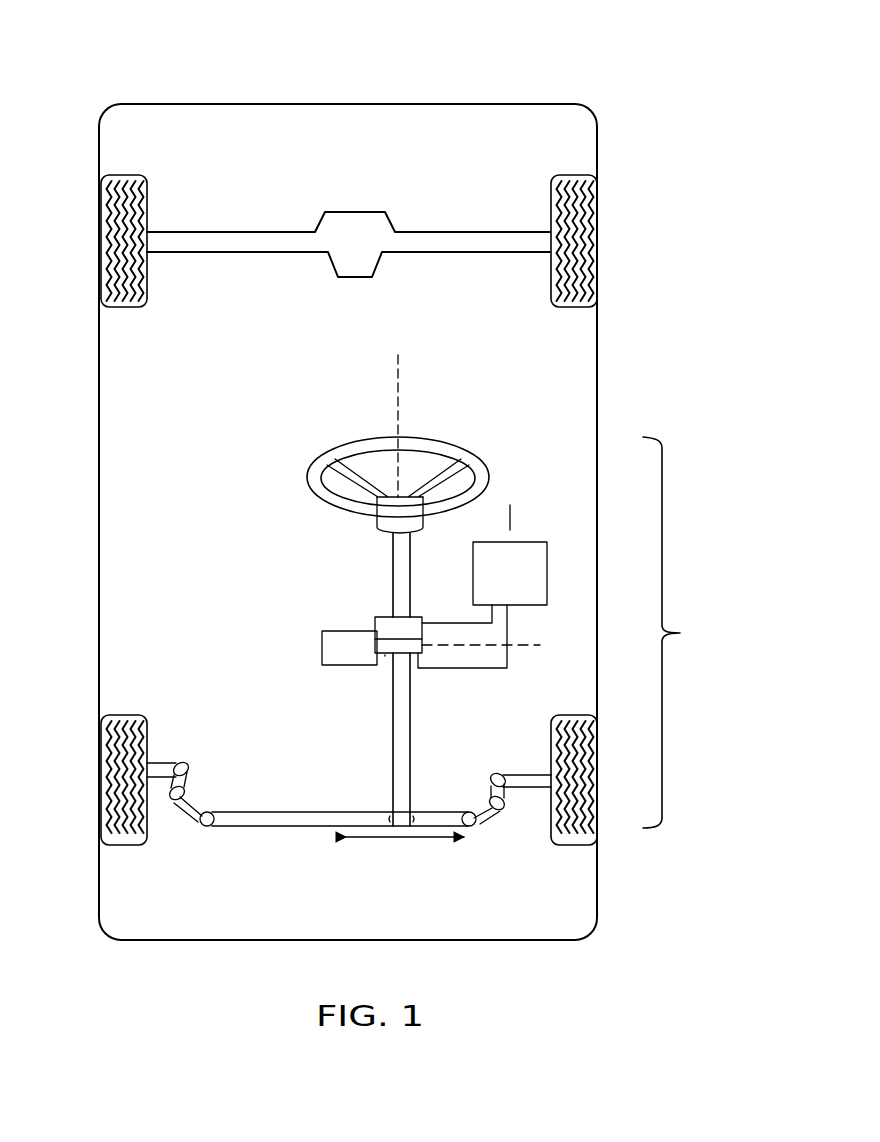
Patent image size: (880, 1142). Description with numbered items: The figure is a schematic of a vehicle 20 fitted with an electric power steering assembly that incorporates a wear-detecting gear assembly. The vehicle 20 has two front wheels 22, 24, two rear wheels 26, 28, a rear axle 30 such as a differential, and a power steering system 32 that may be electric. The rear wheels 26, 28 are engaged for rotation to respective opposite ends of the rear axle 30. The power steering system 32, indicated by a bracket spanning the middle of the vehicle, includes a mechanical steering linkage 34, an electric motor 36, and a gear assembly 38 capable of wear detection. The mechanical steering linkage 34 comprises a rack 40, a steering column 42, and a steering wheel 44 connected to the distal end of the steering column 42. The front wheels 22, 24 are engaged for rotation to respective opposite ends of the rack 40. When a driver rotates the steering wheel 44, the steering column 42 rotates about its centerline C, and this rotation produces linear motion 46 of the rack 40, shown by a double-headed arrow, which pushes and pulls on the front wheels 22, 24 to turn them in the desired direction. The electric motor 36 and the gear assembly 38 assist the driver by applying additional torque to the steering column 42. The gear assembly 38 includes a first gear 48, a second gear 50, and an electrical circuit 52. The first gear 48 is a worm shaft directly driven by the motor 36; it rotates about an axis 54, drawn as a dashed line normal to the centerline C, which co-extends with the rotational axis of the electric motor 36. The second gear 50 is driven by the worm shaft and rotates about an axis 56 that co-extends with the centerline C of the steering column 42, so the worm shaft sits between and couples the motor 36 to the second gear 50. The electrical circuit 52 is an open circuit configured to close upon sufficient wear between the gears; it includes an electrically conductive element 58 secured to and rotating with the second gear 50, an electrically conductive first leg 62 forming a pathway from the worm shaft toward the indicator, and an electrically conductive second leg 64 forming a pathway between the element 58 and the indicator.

The vehicle 20 is at (636, 90).
The front wheel 22 is at (113, 799).
The front wheel 24 is at (585, 787).
The rear wheel 26 is at (112, 243).
The rear wheel 28 is at (584, 224).
The rear axle 30 is at (264, 229).
The power steering system 32 is at (677, 632).
The mechanical steering linkage 34 is at (349, 806).
The electric motor 36 is at (321, 652).
The gear assembly 38 is at (392, 592).
The rack 40 is at (284, 828).
The steering column 42 is at (410, 732).
The steering wheel 44 is at (331, 455).
The linear motion 46 is at (412, 843).
The first gear 48 is at (386, 656).
The second gear 50 is at (413, 615).
The electrical circuit 52 is at (510, 541).
The axis 54 is at (531, 649).
The axis 56 is at (395, 393).
The electrically conductive element 58 is at (541, 575).
The first leg 62 is at (472, 669).
The second leg 64 is at (445, 621).